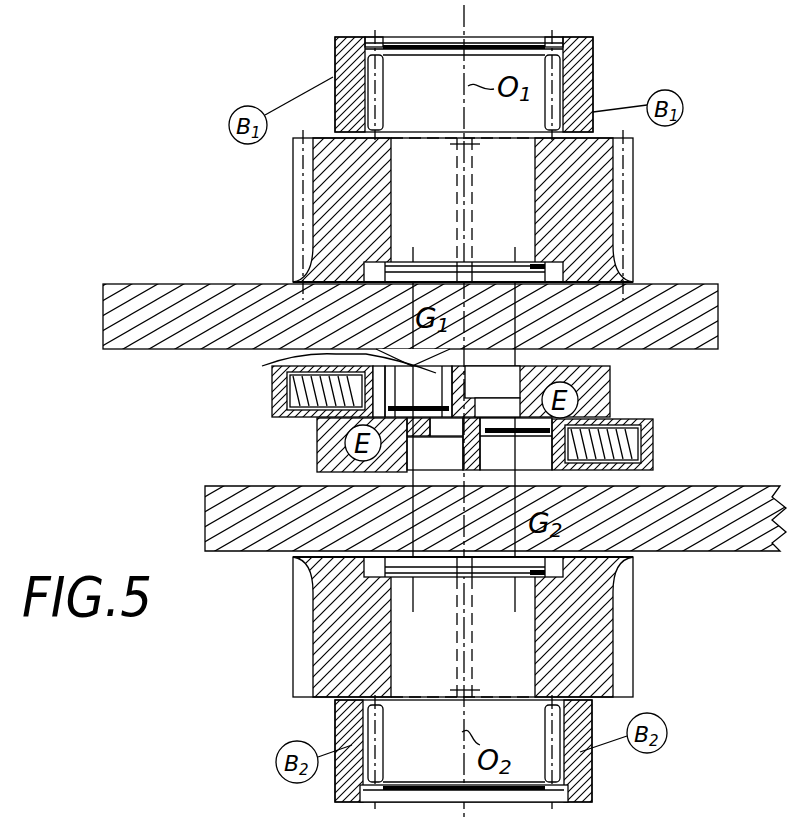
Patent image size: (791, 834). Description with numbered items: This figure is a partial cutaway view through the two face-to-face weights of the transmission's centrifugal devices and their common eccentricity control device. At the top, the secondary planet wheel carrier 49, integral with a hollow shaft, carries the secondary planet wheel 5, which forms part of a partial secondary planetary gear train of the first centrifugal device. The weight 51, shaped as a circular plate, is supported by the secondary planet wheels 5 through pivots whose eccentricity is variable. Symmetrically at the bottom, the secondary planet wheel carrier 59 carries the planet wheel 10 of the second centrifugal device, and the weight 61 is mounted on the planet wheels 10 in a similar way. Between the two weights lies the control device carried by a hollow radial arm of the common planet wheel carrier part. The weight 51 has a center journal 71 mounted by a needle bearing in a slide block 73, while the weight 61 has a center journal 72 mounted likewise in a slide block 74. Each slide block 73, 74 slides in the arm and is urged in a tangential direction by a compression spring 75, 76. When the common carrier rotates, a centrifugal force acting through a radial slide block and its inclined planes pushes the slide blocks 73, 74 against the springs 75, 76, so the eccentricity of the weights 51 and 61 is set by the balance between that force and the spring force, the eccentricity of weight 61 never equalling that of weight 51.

The planet wheel carrier 49 is at (590, 62).
The differential pinion 5 is at (600, 190).
The weight 51 is at (713, 302).
The center journal 71 is at (272, 361).
The slide block 73 is at (522, 386).
The slide block 74 is at (548, 440).
The compression spring 75 is at (292, 384).
The compression spring 76 is at (655, 437).
The weight 61 is at (716, 495).
The center journal 72 is at (503, 478).
The planet wheel 10 is at (600, 628).
The planet wheel carrier 59 is at (580, 790).